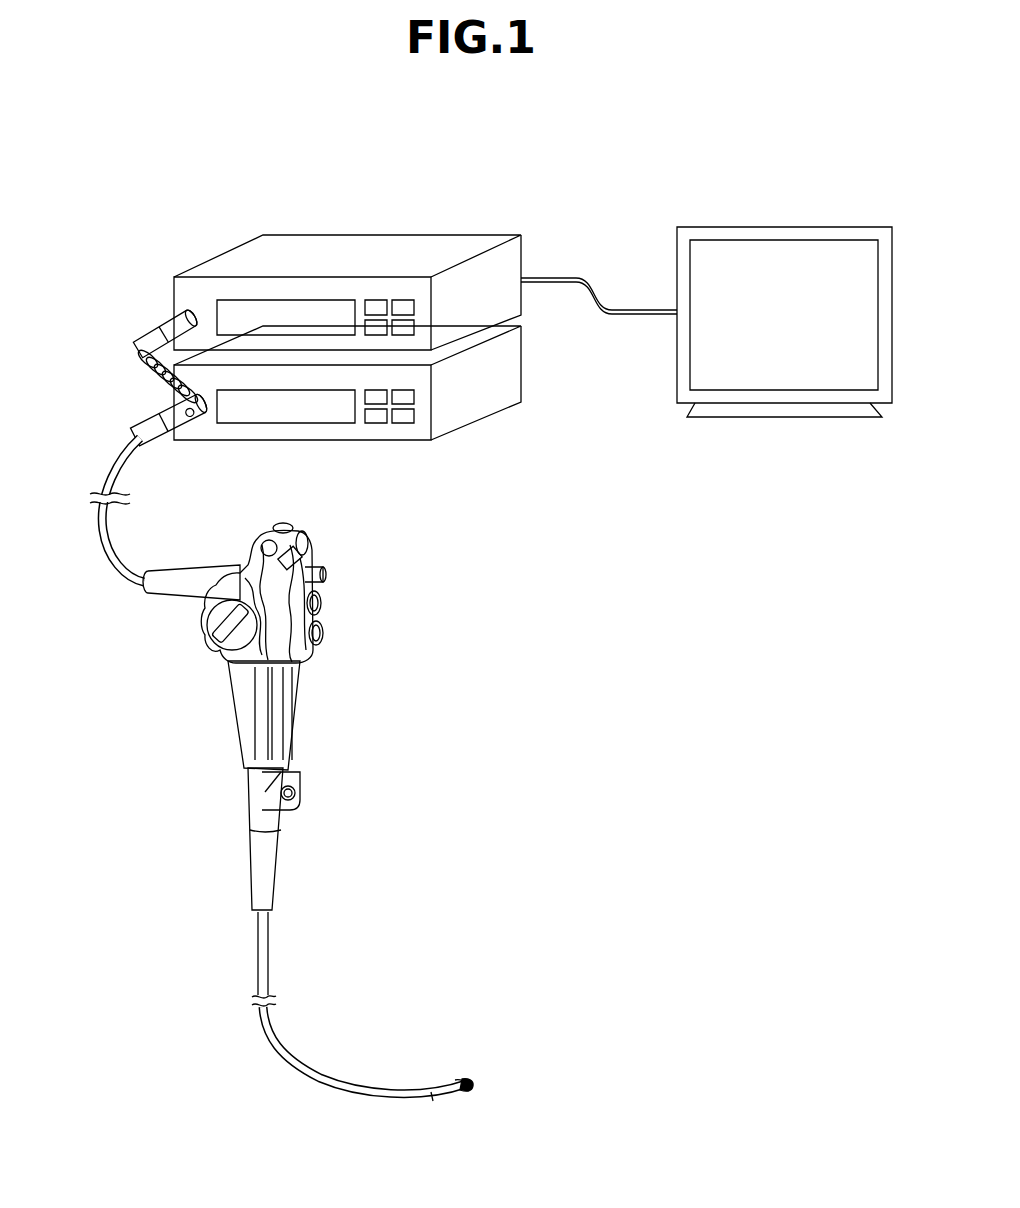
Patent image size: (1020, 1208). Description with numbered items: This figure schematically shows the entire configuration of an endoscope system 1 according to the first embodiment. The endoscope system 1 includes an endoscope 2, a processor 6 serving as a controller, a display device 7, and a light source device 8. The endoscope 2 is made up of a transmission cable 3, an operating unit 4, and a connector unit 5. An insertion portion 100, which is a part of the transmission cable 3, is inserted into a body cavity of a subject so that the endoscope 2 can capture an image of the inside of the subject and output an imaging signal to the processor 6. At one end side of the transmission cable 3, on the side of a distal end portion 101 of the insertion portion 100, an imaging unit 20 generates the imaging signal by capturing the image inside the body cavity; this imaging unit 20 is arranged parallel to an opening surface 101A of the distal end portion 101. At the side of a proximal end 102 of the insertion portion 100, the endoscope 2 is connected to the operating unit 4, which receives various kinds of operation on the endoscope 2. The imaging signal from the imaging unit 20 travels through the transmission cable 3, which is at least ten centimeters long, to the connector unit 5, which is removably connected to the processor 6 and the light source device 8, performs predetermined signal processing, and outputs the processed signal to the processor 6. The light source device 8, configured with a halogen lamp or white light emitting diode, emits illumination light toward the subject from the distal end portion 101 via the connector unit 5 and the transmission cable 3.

The endoscope system 1 is at (822, 154).
The endoscope 2 is at (411, 662).
The transmission cable 3 is at (105, 532).
The operating unit 4 is at (322, 617).
The connector unit 5 is at (168, 412).
The processor 6 is at (486, 243).
The display device 7 is at (786, 236).
The light source device 8 is at (512, 358).
The imaging unit 20 is at (468, 1093).
The insertion portion 100 is at (419, 1037).
The distal end portion 101 is at (476, 1073).
The opening surface 101A is at (478, 1080).
The proximal end 102 is at (274, 914).